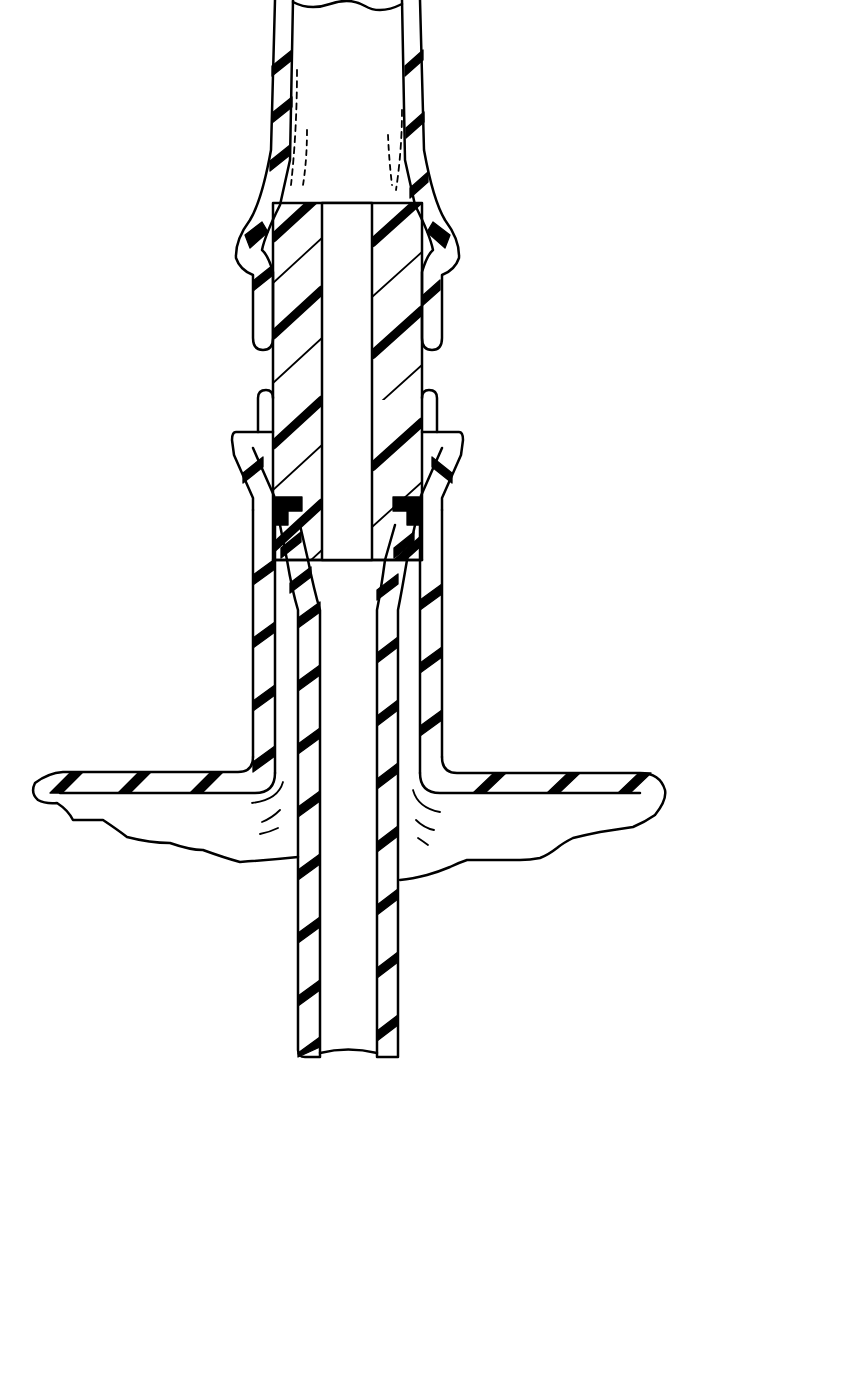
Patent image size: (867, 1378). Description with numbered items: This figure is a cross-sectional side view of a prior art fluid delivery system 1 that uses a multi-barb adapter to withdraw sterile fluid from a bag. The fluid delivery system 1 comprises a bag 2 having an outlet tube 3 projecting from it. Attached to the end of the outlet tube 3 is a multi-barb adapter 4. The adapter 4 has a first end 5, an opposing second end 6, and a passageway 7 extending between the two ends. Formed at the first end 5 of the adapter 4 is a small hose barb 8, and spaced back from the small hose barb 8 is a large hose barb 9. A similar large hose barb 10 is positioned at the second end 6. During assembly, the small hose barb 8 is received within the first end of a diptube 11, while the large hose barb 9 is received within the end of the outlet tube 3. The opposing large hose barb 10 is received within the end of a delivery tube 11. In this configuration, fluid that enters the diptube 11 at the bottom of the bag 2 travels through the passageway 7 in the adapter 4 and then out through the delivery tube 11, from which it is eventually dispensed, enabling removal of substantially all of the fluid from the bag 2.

The fluid delivery system 1 is at (645, 372).
The bag 2 is at (590, 770).
The outlet tube 3 is at (433, 633).
The multi-barb adapter 4 is at (412, 375).
The first end 5 is at (447, 470).
The second end 6 is at (411, 236).
The passageway 7 is at (345, 317).
The small hose barb 8 is at (285, 538).
The large hose barb 9 is at (268, 486).
The large hose barb 10 is at (242, 242).
The diptube / delivery tube 11 is at (412, 113).